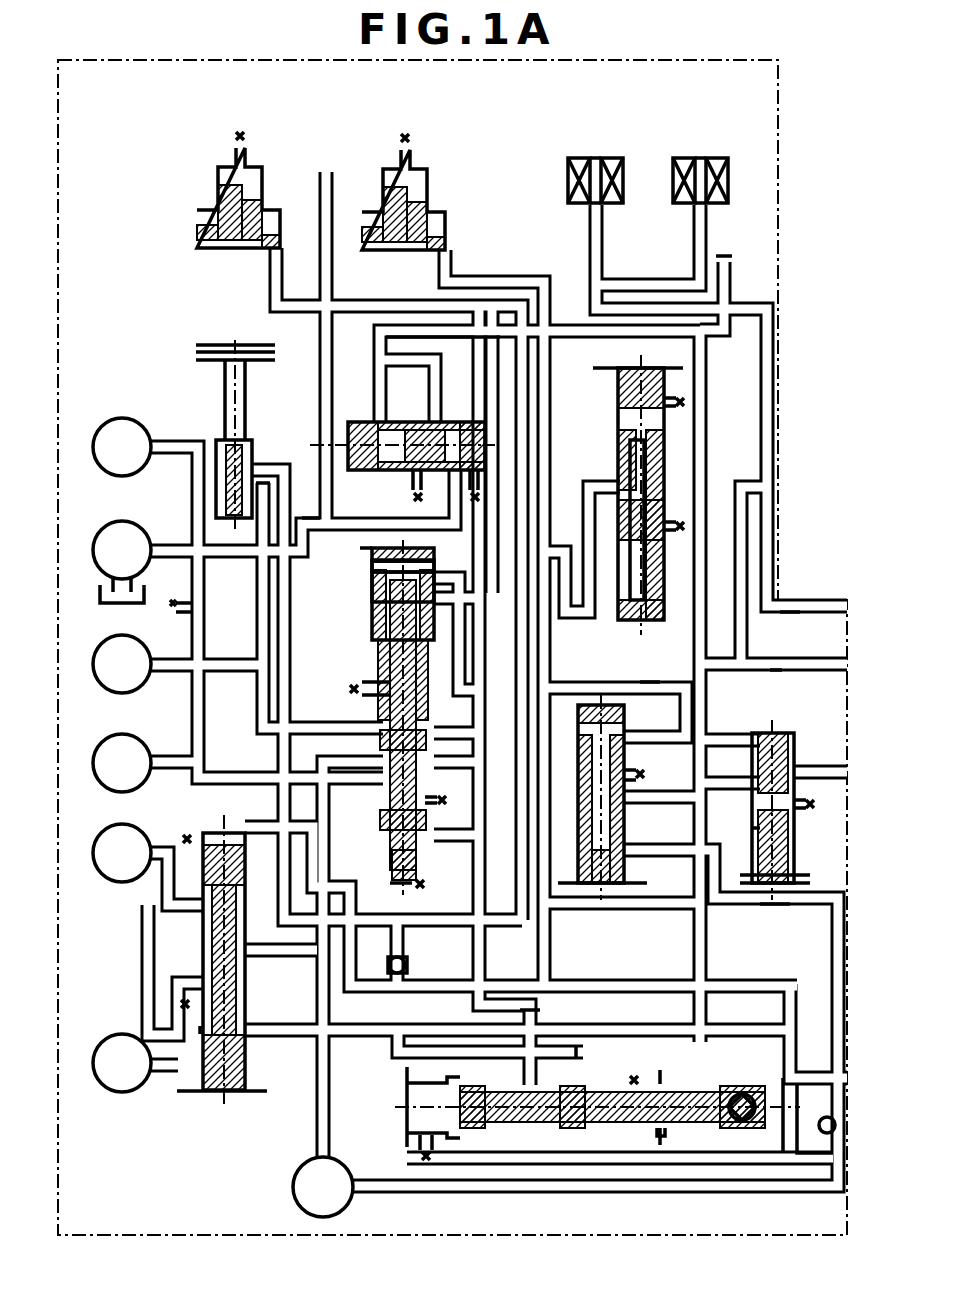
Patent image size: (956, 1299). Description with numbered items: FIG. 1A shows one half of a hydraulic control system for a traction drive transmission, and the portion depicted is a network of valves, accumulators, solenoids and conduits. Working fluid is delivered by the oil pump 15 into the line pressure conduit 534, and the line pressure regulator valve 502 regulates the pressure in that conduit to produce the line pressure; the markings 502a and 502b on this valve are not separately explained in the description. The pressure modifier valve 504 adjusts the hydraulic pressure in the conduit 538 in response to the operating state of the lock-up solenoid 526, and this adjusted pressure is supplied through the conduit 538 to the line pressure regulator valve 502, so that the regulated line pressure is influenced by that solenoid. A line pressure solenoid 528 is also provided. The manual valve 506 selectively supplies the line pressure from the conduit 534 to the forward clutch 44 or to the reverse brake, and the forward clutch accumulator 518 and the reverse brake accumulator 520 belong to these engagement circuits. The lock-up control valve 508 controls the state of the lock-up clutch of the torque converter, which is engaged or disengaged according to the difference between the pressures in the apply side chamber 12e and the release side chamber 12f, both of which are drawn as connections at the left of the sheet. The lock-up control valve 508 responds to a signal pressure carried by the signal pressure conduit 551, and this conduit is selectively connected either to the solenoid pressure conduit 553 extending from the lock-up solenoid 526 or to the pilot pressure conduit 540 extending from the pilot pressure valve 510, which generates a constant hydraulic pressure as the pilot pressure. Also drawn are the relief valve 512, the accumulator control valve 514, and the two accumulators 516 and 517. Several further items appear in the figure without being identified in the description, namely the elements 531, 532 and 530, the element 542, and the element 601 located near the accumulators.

The forward clutch accumulator 518 is at (227, 265).
The reverse brake accumulator 520 is at (468, 234).
The lock-up solenoid 526 is at (577, 234).
The line pressure solenoid 528 is at (730, 218).
The hydraulic device 531 is at (134, 418).
The oil pump 15 is at (137, 522).
The hydraulic device 532 is at (180, 615).
The forward clutch 44 is at (138, 740).
The release side chamber 12f is at (143, 830).
The apply side chamber 12e is at (120, 1033).
The pump 530 is at (345, 1160).
The relief valve 512 is at (278, 440).
The accumulator control valve 514 is at (355, 404).
The fluid passage 542 is at (462, 392).
The valve housing 601 is at (578, 340).
The accumulator 516 is at (604, 430).
The accumulator 517 is at (686, 565).
The line pressure regulator valve 502 is at (366, 675).
The valve land 502a is at (378, 580).
The valve land 502b is at (380, 608).
The line pressure conduit 534 is at (310, 525).
The conduit 538 is at (642, 680).
The solenoid pressure conduit 553 is at (790, 616).
The pressure modifier valve 504 is at (638, 740).
The pilot pressure valve 510 is at (752, 718).
The pilot pressure conduit 540 is at (752, 828).
The signal pressure conduit 551 is at (768, 900).
The lock-up control valve 508 is at (258, 1048).
The manual valve 506 is at (695, 1076).